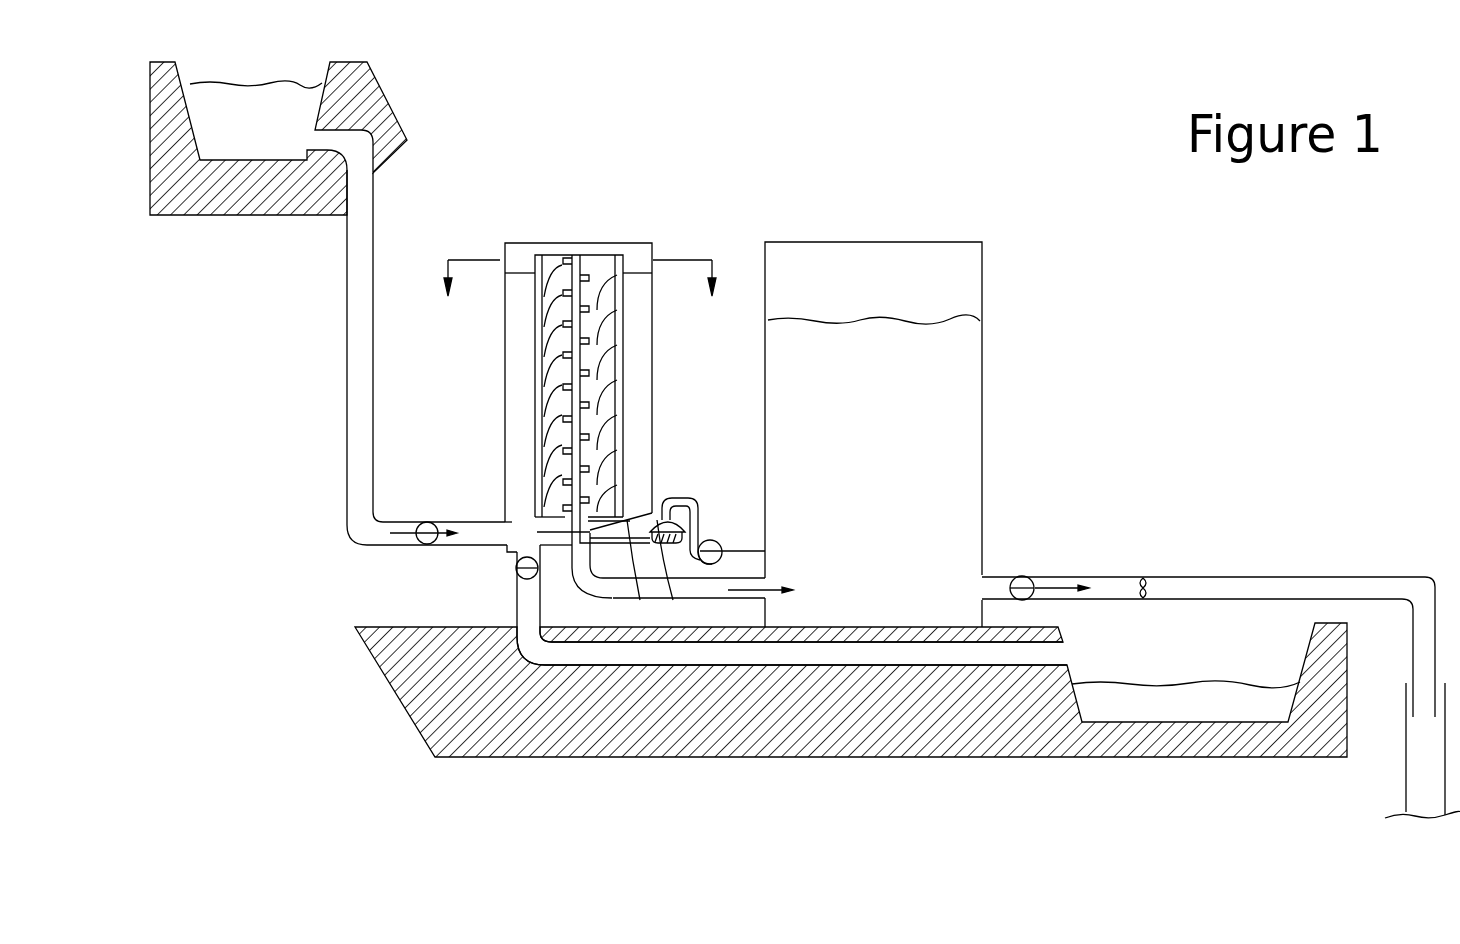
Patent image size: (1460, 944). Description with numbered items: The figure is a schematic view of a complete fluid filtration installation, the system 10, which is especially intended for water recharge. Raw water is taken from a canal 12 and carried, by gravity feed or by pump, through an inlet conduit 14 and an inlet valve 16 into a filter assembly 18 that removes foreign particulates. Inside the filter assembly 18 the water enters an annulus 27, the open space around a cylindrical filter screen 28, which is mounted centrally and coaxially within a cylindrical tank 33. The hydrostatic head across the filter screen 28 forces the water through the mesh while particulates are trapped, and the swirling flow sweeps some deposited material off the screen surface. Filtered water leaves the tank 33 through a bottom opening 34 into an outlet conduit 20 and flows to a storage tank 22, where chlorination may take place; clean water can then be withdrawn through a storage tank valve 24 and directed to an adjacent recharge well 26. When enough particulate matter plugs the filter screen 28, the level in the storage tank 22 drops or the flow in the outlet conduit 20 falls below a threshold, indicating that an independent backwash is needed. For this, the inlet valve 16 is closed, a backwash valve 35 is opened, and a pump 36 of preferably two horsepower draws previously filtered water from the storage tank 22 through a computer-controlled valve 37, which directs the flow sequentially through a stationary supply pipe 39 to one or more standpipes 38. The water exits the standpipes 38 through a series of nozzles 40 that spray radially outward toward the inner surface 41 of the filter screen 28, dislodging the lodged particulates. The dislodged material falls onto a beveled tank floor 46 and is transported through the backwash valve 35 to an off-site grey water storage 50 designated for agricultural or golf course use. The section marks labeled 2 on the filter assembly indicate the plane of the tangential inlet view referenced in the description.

The system 10 is at (765, 122).
The canal 12 is at (277, 135).
The inlet conduit 14 is at (374, 210).
The inlet valve 16 is at (397, 537).
The filter assembly 18 is at (603, 393).
The outlet conduit 20 is at (610, 603).
The storage tank 22 is at (985, 408).
The storage tank valve 24 is at (1028, 576).
The recharge well 26 is at (1416, 760).
The annulus 27 is at (518, 373).
The filter screen 28 is at (617, 377).
The tank 33 is at (635, 250).
The bottom opening 34 is at (570, 532).
The backwash valve 35 is at (516, 567).
The pump 36 is at (712, 539).
The computer-controlled valve 37 is at (668, 518).
The standpipes 38 is at (575, 255).
The stationary supply pipe 39 is at (630, 573).
The nozzles 40 is at (597, 320).
The inner surface 41 is at (610, 343).
The beveled tank floor 46 is at (675, 573).
The grey water storage 50 is at (1237, 658).
The section line 2- 2 is at (581, 264).